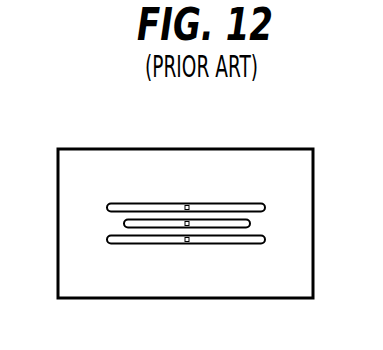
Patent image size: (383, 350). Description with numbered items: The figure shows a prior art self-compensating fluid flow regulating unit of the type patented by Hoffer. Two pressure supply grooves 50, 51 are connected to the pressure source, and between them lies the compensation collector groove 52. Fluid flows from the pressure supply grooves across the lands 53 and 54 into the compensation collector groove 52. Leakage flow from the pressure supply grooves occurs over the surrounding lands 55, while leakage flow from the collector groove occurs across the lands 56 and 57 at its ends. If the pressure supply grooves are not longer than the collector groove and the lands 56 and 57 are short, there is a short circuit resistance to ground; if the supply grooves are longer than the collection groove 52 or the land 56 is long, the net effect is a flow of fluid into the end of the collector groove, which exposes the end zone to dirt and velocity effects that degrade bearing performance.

The groove 50 is at (110, 243).
The groove 51 is at (113, 203).
The compensation collector groove 52 is at (158, 220).
The land 53 is at (213, 213).
The land 54 is at (222, 232).
The lands 55 is at (255, 172).
The land 56 is at (267, 220).
The land 57 is at (110, 223).